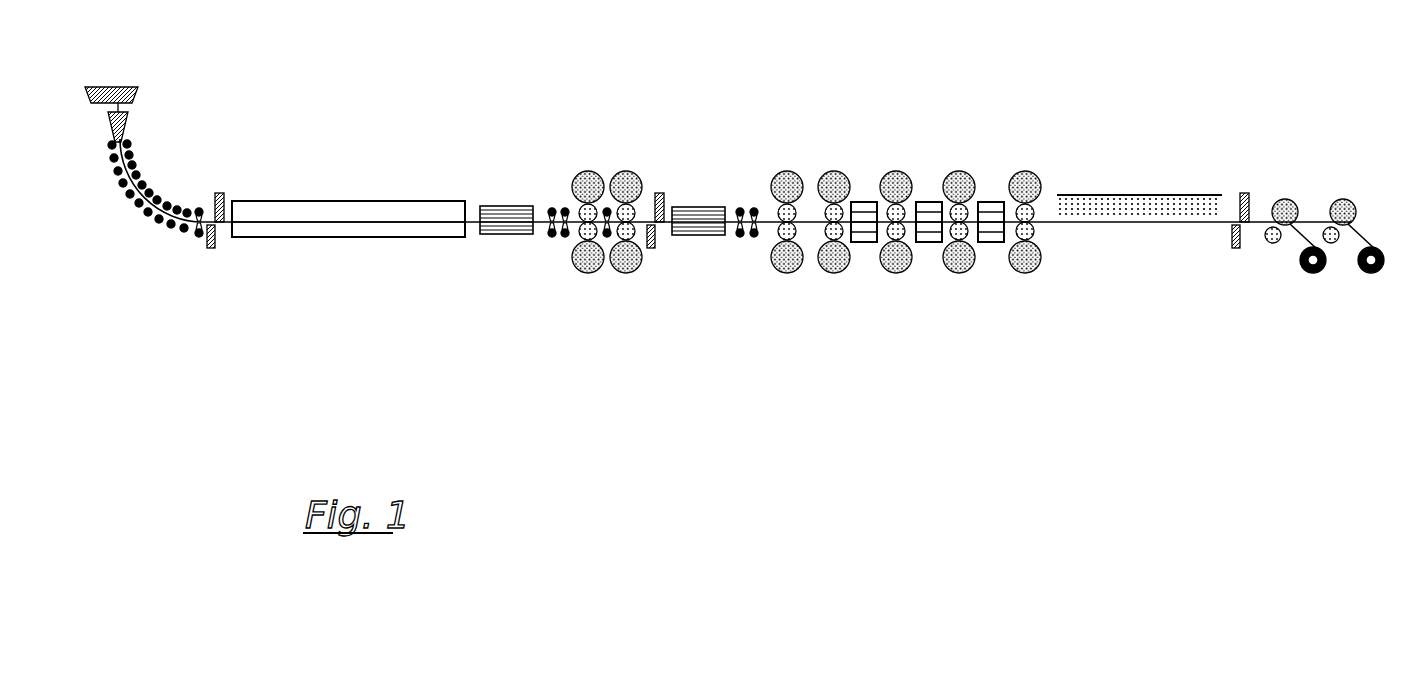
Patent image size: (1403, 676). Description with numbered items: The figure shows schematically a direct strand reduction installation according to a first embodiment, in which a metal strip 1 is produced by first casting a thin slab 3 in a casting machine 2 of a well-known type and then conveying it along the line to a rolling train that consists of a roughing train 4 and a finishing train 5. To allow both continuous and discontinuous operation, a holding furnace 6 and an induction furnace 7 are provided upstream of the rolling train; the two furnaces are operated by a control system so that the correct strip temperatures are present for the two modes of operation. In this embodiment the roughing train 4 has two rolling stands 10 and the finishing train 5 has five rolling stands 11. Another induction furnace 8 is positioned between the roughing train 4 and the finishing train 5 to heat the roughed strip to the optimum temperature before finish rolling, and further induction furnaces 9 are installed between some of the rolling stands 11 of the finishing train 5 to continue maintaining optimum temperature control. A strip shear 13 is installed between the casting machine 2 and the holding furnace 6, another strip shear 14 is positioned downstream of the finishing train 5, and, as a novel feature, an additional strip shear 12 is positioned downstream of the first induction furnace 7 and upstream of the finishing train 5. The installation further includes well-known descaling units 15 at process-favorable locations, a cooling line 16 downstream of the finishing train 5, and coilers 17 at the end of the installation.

The metal strip 1 is at (1259, 222).
The casting machine 2 is at (170, 140).
The thin slab 3 is at (237, 203).
The roughing train 4 is at (607, 203).
The finishing train 5 is at (906, 210).
The holding furnace 6 is at (381, 197).
The induction furnace 7 is at (500, 207).
The induction furnace 8 is at (703, 210).
The induction furnaces 9 is at (862, 203).
The rolling stands 10 is at (627, 282).
The rolling stands 11 is at (793, 280).
The strip shear 12 is at (657, 193).
The strip shear 13 is at (227, 187).
The strip shear 14 is at (1242, 197).
The descaling units 15 is at (557, 245).
The cooling line 16 is at (1123, 200).
The coilers 17 is at (1343, 197).